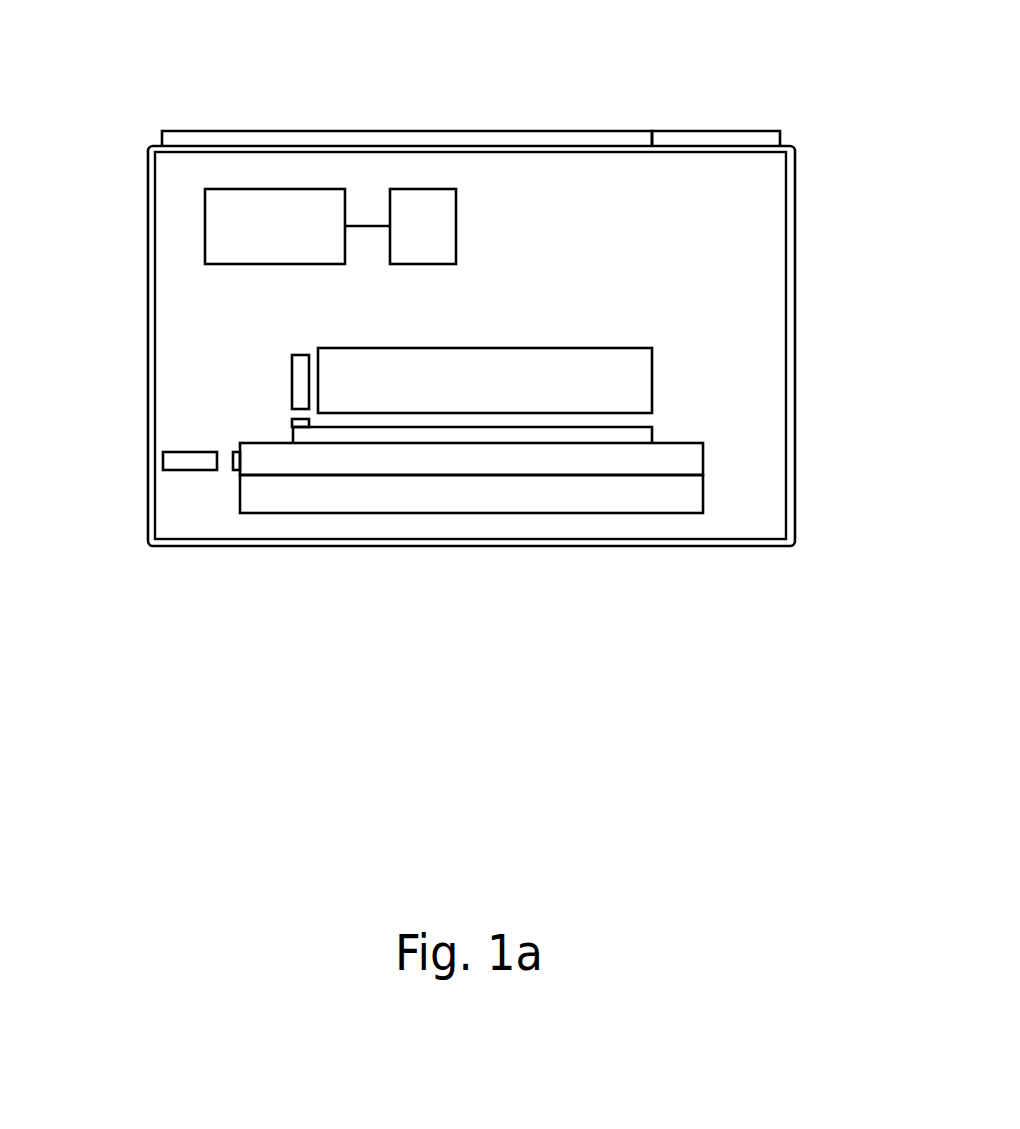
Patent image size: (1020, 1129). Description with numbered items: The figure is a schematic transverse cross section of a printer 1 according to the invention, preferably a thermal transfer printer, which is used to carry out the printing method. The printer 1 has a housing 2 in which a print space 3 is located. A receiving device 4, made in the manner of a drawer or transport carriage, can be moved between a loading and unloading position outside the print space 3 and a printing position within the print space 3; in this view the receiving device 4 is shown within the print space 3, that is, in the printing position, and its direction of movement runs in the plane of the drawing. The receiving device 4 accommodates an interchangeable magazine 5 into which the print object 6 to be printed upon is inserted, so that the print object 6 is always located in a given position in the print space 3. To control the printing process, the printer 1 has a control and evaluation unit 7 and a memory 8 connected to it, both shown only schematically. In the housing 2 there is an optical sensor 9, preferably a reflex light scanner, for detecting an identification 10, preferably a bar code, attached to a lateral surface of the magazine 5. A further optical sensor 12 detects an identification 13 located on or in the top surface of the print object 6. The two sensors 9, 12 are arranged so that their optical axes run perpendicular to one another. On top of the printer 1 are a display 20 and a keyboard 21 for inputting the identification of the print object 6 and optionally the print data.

The printer 1 is at (647, 585).
The housing 2 is at (758, 546).
The print space 3 is at (683, 413).
The receiving device 4 is at (337, 500).
The magazine 5 is at (418, 462).
The print object 6 is at (528, 435).
The control and evaluation unit 7 is at (276, 208).
The memory 8 is at (440, 220).
The optical sensor 9 is at (187, 462).
The identification 10 is at (236, 470).
The optical sensor 12 is at (302, 383).
The identification 13 is at (303, 425).
The display 20 is at (531, 132).
The keyboard 21 is at (710, 128).